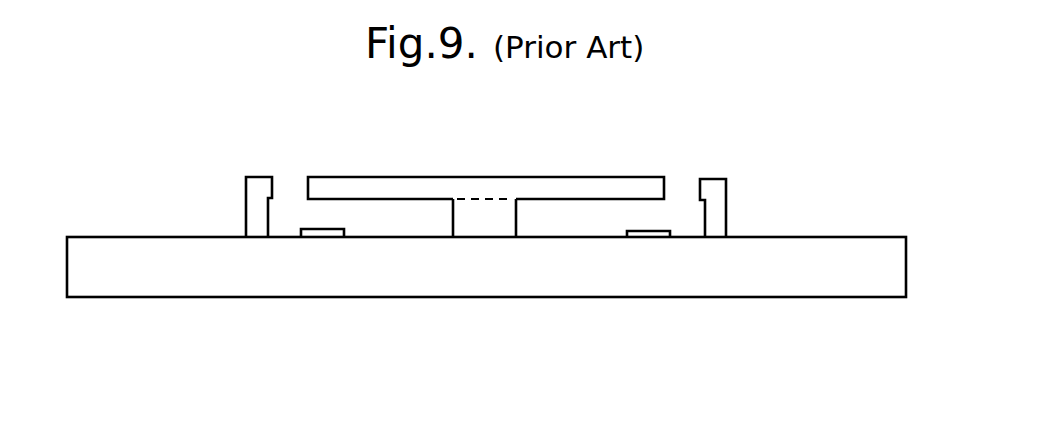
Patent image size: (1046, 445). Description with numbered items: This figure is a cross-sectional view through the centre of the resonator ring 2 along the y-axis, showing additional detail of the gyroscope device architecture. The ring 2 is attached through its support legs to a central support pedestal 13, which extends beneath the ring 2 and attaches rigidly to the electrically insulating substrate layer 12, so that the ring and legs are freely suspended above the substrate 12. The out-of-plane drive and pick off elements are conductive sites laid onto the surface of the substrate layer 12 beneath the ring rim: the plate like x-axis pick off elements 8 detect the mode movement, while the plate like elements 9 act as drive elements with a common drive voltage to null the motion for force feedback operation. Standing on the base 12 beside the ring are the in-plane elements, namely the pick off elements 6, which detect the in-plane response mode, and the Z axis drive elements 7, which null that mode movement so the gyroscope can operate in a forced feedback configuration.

The ring 2 is at (343, 176).
The pick off elements 6 is at (260, 177).
The Z axis drive elements 7 is at (712, 179).
The x-axis pick off elements 8 is at (334, 229).
The plate like elements 9 is at (645, 232).
The substrate layer 12 is at (890, 266).
The central support pedestal 13 is at (489, 230).